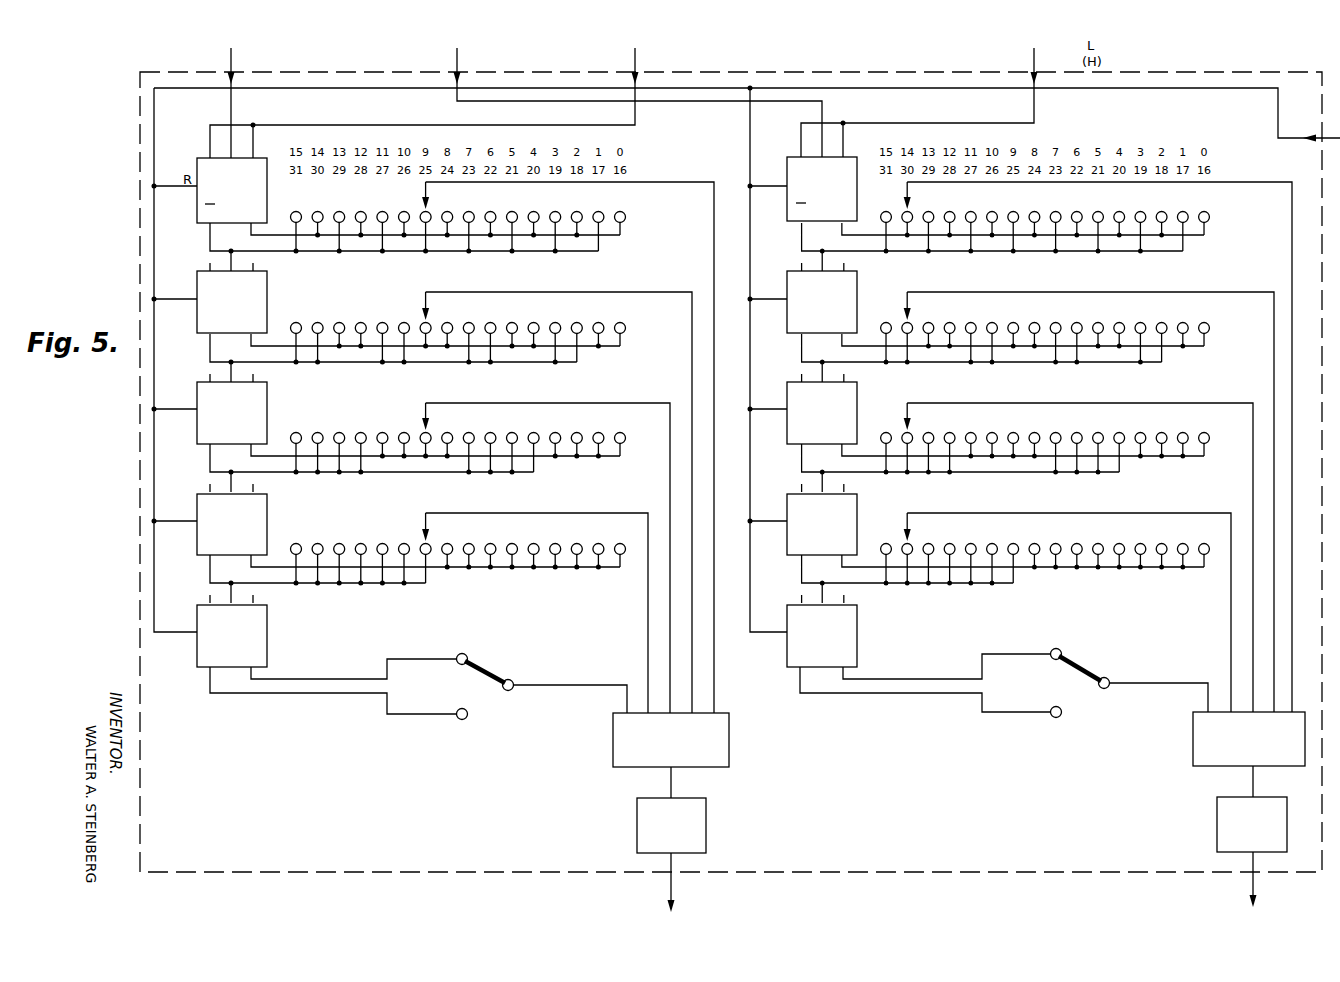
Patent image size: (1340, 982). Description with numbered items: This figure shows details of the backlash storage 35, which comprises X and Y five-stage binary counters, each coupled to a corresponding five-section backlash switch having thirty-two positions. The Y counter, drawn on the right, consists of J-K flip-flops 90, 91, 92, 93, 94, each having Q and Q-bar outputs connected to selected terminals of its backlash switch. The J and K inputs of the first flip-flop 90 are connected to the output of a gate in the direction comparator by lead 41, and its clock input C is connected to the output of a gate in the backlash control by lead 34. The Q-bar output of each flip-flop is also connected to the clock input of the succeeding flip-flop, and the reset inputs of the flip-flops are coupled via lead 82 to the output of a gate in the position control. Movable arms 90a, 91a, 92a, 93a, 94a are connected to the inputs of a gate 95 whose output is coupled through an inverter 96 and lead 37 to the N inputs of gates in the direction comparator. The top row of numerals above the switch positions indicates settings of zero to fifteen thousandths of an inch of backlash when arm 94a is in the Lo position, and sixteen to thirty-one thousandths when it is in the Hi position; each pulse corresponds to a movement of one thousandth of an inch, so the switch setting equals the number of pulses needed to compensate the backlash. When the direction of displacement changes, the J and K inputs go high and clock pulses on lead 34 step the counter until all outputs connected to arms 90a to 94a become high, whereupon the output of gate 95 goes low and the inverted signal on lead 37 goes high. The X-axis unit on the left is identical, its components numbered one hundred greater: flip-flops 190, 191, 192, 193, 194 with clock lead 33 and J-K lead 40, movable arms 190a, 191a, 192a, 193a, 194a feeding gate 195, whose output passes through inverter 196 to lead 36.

The lead 33 is at (235, 70).
The lead 34 is at (461, 70).
The lead 40 is at (639, 70).
The lead 41 is at (1038, 70).
The lead 82 is at (1278, 121).
The backlash storage 35 is at (422, 872).
The lead 36 is at (664, 895).
The lead 37 is at (1260, 889).
The J-K flip-flop 190 is at (232, 190).
The J-K flip-flop 191 is at (232, 302).
The J-K flip-flop 192 is at (232, 413).
The J-K flip-flop 193 is at (232, 524).
The J-K flip-flop 194 is at (232, 636).
The gate 195 is at (671, 740).
The inverter 196 is at (671, 810).
The movable arm 190a is at (429, 192).
The movable arm 191a is at (429, 302).
The movable arm 192a is at (429, 413).
The movable arm 193a is at (429, 523).
The movable arm 194a is at (500, 680).
The J-K flip-flop 90 is at (822, 189).
The J-K flip-flop 91 is at (822, 302).
The J-K flip-flop 92 is at (822, 413).
The J-K flip-flop 93 is at (822, 524).
The J-K flip-flop 94 is at (822, 636).
The gate 95 is at (1249, 739).
The inverter 96 is at (1252, 809).
The movable arm 90a is at (911, 192).
The movable arm 91a is at (911, 302).
The movable arm 92a is at (911, 413).
The movable arm 93a is at (911, 523).
The movable arm 94a is at (1085, 673).